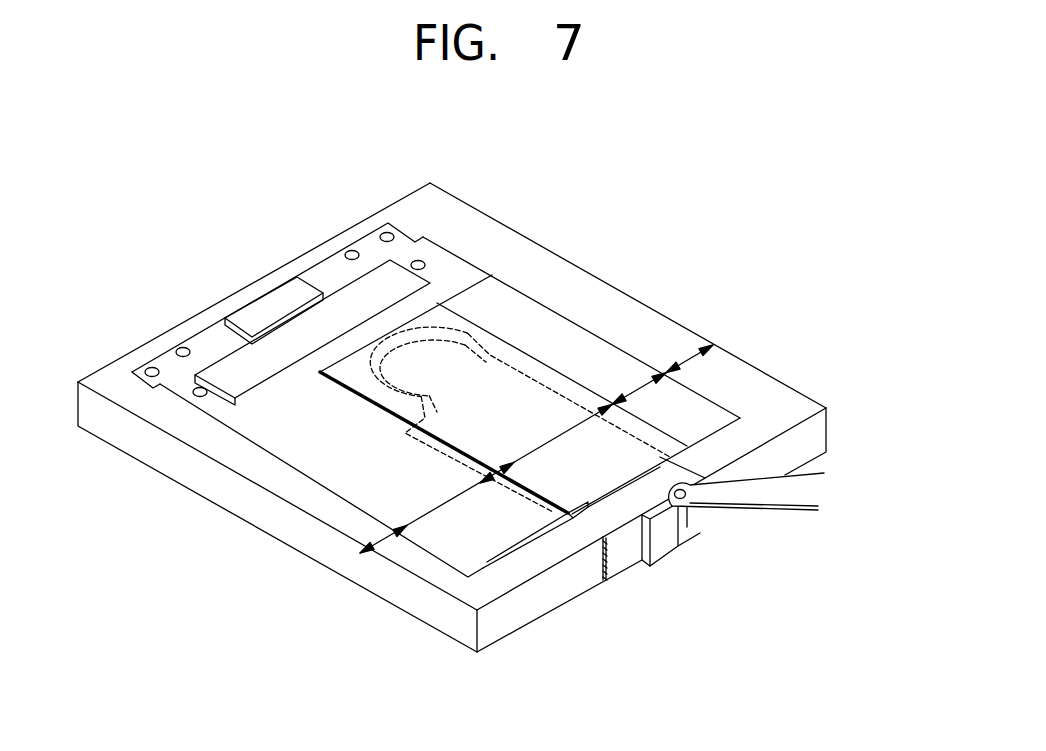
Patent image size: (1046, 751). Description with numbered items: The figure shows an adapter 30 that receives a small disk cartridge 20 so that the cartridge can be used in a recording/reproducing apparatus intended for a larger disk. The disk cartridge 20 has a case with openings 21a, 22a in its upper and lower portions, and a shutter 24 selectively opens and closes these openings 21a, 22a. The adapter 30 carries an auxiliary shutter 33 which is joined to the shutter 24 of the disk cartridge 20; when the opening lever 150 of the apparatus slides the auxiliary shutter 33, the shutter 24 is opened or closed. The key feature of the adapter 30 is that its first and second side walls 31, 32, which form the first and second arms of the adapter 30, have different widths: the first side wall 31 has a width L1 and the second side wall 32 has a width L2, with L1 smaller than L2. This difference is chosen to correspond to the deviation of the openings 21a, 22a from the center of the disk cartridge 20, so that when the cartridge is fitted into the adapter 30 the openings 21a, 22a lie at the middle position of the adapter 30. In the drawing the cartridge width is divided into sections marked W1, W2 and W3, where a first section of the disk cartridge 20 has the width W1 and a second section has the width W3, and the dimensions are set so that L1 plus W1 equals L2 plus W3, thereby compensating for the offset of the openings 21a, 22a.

The disk cartridge 20 is at (610, 358).
The opening 21a is at (523, 373).
The opening 22a is at (523, 373).
The shutter 24 is at (660, 436).
The adapter 30 is at (842, 418).
The first side wall 31 is at (458, 582).
The second side wall 32 is at (782, 397).
The auxiliary shutter 33 is at (667, 537).
The opening lever 150 is at (793, 500).
The width of first side wall L1 is at (363, 543).
The width of second side wall L2 is at (684, 354).
The first width of disk cartridge W1 is at (460, 493).
The width W2 is at (563, 434).
The width of second section of disk cartridge W3 is at (632, 383).